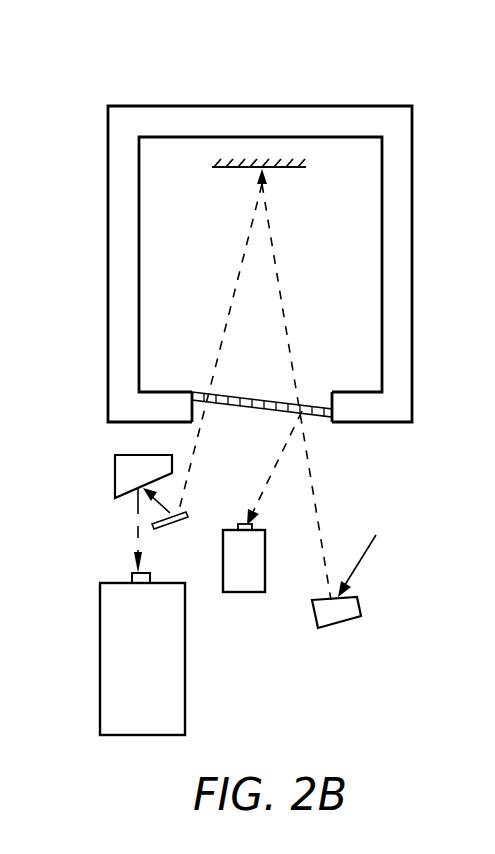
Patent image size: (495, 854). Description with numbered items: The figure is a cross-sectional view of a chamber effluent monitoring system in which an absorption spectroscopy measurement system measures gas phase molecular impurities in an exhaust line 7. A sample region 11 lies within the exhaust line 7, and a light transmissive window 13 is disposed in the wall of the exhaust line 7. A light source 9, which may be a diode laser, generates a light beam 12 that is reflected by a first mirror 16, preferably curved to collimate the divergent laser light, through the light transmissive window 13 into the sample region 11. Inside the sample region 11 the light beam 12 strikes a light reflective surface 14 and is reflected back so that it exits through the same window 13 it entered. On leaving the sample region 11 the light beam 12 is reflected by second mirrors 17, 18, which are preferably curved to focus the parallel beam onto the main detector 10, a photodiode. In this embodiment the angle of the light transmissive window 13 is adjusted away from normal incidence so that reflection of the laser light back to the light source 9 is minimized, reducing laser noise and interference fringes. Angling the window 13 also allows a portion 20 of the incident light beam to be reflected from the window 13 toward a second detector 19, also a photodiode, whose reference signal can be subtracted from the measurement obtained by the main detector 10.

The exhaust line 7 is at (330, 106).
The light source 9 is at (363, 554).
The detector 10 is at (152, 672).
The sample region 11 is at (263, 343).
The light beam 12 is at (278, 277).
The light transmissive window 13 is at (322, 412).
The light reflective surface 14 is at (290, 168).
The first mirror 16 is at (348, 616).
The second mirror 17 is at (170, 528).
The second mirror 18 is at (115, 474).
The second detector 19 is at (243, 592).
The portion of the light beam 20 is at (285, 452).